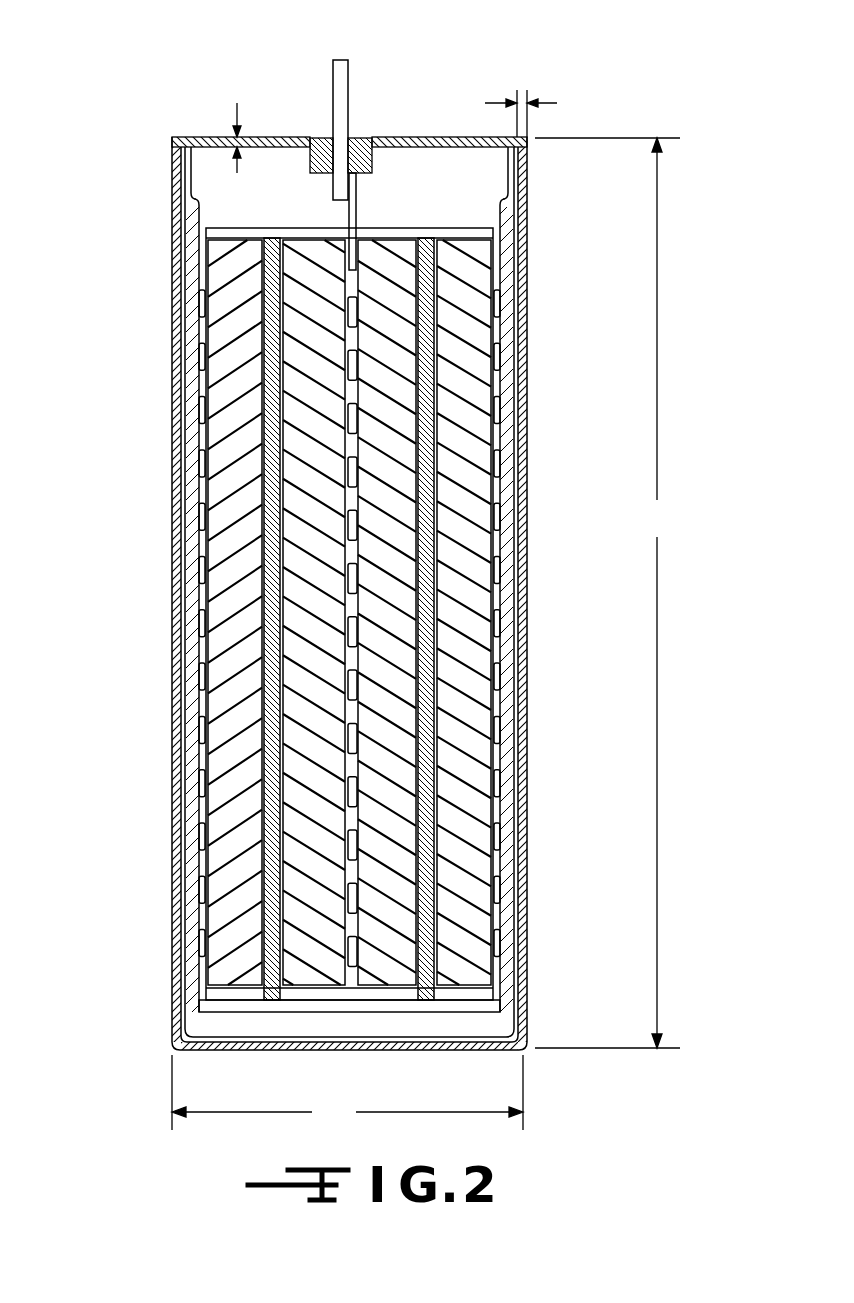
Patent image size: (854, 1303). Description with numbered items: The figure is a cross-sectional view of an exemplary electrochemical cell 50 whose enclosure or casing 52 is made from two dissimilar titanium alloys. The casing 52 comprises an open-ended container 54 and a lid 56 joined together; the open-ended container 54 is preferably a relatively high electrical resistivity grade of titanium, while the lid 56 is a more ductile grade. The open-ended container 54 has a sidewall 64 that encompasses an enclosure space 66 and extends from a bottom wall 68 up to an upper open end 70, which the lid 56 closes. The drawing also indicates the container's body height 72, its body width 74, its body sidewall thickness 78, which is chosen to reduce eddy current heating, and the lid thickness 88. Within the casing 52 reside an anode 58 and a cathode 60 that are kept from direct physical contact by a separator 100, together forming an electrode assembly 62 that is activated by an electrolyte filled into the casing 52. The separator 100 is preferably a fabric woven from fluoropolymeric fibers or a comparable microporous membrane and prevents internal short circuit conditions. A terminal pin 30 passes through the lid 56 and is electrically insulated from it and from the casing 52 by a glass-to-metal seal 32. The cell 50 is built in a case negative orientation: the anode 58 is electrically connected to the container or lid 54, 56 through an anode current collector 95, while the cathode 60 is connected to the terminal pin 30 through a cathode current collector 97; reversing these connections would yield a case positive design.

The terminal pin 30 is at (349, 98).
The glass-to-metal seal 32 is at (326, 138).
The electrochemical cell 50 is at (616, 130).
The casing 52 is at (345, 547).
The open-ended container 54 is at (522, 450).
The lid 56 is at (419, 137).
The anode 58 is at (222, 490).
The cathode 60 is at (280, 408).
The electrode assembly 62 is at (388, 1014).
The sidewall 64 is at (188, 597).
The enclosure space 66 is at (255, 195).
The bottom wall 68 is at (533, 1018).
The upper open end 70 is at (163, 230).
The body height 72 is at (607, 593).
The body width 74 is at (347, 1093).
The body sidewall thickness 78 is at (540, 113).
The lid thickness 88 is at (220, 119).
The anode current collector 95 is at (195, 305).
The cathode current collector 97 is at (352, 300).
The separator 100 is at (442, 612).